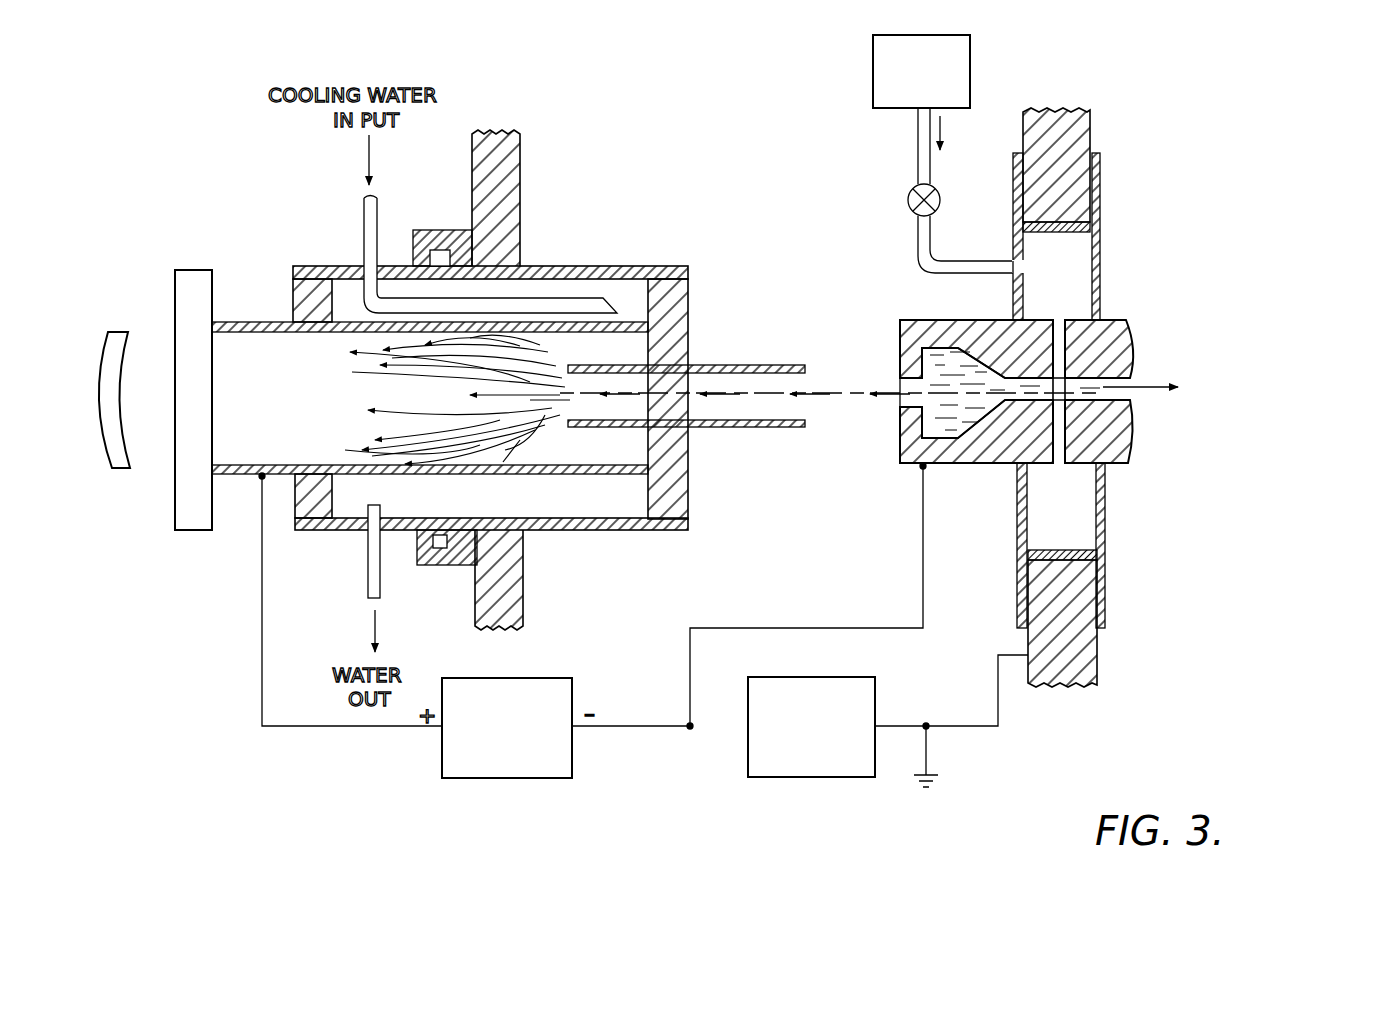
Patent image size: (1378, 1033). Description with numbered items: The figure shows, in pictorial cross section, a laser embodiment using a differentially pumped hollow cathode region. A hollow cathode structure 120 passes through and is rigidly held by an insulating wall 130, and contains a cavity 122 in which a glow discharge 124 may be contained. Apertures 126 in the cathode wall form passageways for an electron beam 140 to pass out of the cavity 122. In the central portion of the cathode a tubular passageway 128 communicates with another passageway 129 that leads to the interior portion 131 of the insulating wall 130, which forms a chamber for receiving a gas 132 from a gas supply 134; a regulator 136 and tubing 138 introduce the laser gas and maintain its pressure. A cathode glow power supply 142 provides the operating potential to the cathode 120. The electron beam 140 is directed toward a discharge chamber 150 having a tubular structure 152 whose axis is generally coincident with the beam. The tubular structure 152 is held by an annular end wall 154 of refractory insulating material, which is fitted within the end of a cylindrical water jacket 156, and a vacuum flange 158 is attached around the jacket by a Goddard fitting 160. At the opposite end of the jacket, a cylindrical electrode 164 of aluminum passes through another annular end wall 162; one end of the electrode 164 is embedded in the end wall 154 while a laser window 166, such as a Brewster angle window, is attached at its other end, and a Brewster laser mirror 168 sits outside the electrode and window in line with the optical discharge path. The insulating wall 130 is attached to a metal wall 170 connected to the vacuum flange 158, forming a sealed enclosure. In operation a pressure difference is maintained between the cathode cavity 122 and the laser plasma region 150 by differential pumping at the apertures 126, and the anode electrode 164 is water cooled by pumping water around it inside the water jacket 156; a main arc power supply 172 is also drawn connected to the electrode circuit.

The hollow cathode structure 120 is at (884, 324).
The cavity 122 is at (900, 452).
The glow discharge 124 is at (942, 380).
The apertures 126 is at (906, 388).
The tubular passageway 128 is at (1090, 396).
The passageway 129 is at (1052, 470).
The insulating wall 130 is at (1100, 298).
The interior portion 131 is at (1012, 270).
The gas 132 is at (1075, 257).
The gas supply 134 is at (873, 72).
The regulator 136 is at (908, 200).
The tubing 138 is at (989, 247).
The electron beam 140 is at (868, 395).
The cathode glow power supply 142 is at (875, 680).
The discharge chamber 150 is at (306, 408).
The tubular structure 152 is at (730, 365).
The end wall 154 is at (688, 312).
The water jacket 156 is at (620, 266).
The vacuum flange 158 is at (520, 158).
The Goddard fitting 160 is at (434, 231).
The end wall 162 is at (300, 285).
The cylindrical electrode 164 is at (263, 322).
The laser window 166 is at (185, 278).
The laser mirror 168 is at (116, 336).
The metal wall 170 is at (1085, 134).
The main arc power supply 172 is at (560, 678).